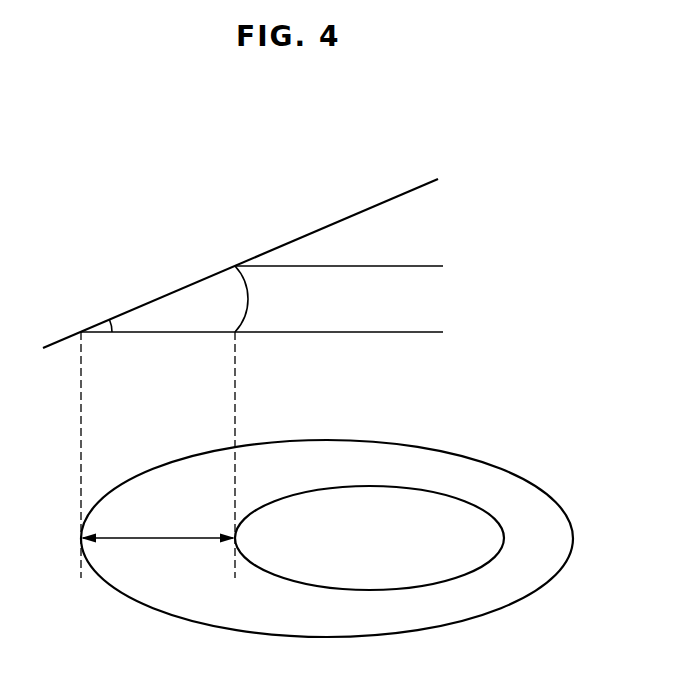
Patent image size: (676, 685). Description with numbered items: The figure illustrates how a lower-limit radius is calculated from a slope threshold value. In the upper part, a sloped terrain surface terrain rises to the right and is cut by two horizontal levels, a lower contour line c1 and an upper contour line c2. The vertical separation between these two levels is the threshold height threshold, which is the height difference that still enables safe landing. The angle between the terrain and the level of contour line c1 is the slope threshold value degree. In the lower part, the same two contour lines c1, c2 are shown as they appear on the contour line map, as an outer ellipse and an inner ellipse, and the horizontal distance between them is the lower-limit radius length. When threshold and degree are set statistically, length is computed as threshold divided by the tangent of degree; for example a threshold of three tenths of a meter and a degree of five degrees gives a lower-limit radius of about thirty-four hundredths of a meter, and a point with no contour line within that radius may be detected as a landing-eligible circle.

The element terrain is at (271, 263).
The contour line c1 is at (326, 478).
The contour line c2 is at (384, 422).
The threshold height threshold is at (291, 299).
The slope threshold value degree is at (153, 320).
The lower-limit radius length is at (158, 455).